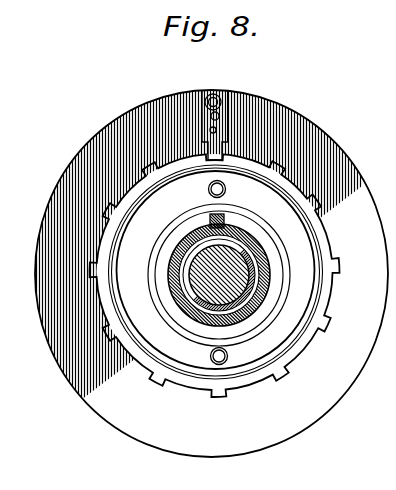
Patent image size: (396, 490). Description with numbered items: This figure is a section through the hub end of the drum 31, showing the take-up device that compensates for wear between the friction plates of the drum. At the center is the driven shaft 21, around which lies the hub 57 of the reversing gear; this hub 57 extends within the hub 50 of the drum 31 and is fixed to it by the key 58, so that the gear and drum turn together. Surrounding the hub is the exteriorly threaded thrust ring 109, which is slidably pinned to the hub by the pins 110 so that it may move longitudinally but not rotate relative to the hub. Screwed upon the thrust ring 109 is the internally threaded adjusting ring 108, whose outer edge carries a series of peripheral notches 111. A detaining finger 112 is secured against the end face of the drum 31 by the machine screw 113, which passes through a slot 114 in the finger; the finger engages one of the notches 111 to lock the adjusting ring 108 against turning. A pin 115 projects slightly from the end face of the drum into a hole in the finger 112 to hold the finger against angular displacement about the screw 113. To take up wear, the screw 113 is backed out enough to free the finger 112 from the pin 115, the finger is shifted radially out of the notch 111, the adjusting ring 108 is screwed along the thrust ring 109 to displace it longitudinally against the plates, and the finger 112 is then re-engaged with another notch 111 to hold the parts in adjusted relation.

The driven shaft 21 is at (217, 275).
The drum 31 is at (345, 156).
The hub of the drum 50 is at (263, 238).
The hub of the gear 57 is at (268, 268).
The key 58 is at (221, 219).
The adjusting ring 108 is at (333, 292).
The thrust ring 109 is at (308, 312).
The pins 110 is at (208, 190).
The peripheral notches 111 is at (287, 158).
The detaining finger 112 is at (223, 137).
The machine screw 113 is at (215, 94).
The slot 114 is at (219, 114).
The pin 115 is at (210, 131).